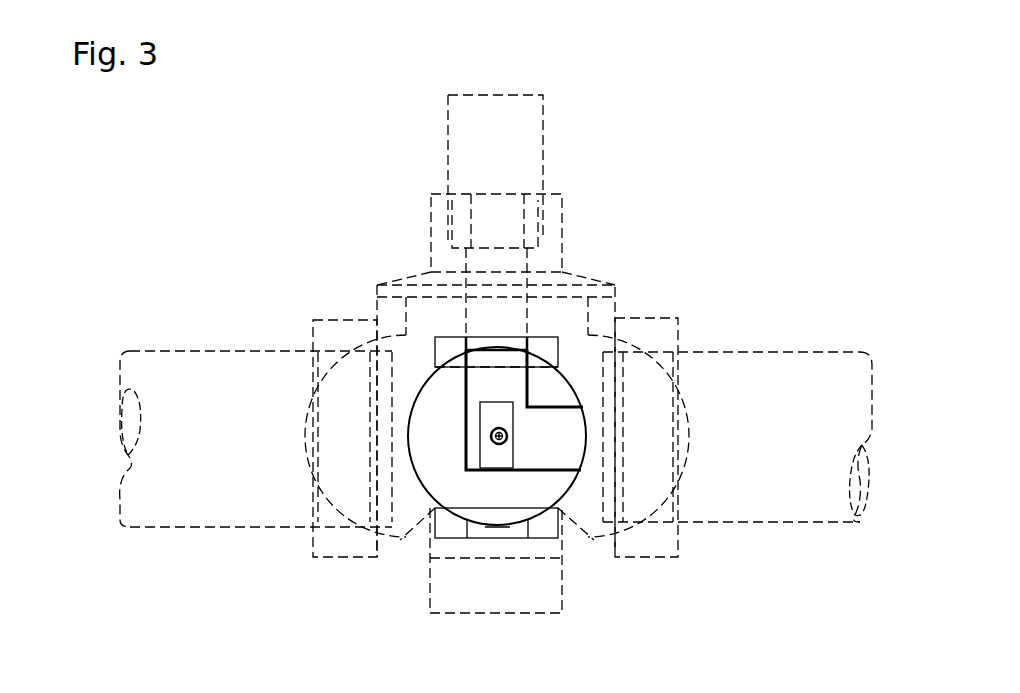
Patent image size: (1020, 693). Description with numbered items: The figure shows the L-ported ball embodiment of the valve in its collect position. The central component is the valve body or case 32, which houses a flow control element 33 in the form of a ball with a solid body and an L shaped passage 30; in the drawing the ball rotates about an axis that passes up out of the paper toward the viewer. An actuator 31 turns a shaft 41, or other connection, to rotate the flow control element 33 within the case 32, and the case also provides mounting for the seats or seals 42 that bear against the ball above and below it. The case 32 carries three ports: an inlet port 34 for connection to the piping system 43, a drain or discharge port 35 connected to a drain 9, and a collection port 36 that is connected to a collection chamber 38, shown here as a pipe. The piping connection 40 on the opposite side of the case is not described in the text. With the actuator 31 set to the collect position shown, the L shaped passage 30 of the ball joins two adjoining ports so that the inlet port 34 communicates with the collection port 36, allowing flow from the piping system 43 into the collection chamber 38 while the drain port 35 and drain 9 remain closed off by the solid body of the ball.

The drain 9 is at (532, 602).
The L shaped passage 30 is at (497, 436).
The actuator 31 is at (453, 345).
The valve body or case 32 is at (373, 320).
The flow control element 33 is at (553, 392).
The inlet port 34 is at (518, 336).
The drain or discharge port 35 is at (472, 537).
The collection port 36 is at (590, 462).
The collection chamber 38 is at (737, 437).
The inlet pipe 40 is at (256, 439).
The shaft 41 is at (490, 447).
The seats or seals 42 is at (487, 402).
The piping system 43 is at (495, 171).